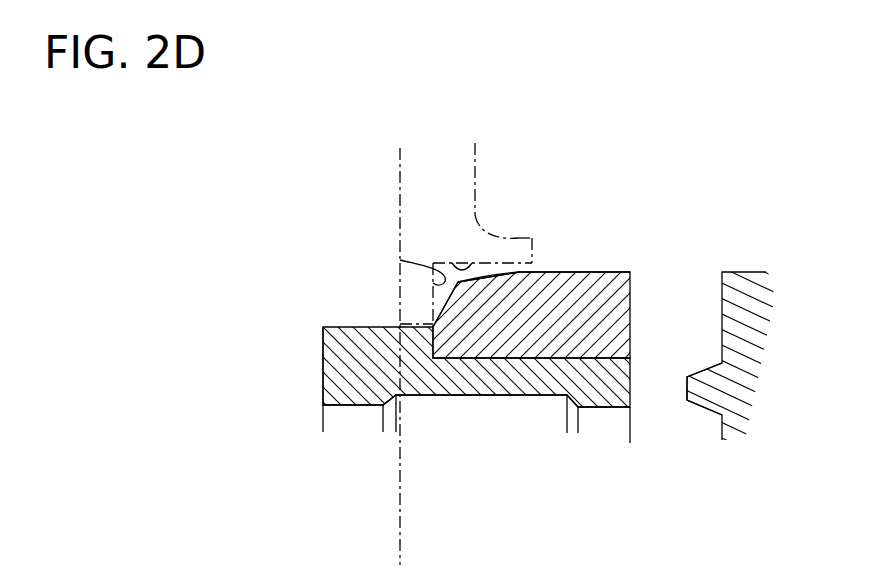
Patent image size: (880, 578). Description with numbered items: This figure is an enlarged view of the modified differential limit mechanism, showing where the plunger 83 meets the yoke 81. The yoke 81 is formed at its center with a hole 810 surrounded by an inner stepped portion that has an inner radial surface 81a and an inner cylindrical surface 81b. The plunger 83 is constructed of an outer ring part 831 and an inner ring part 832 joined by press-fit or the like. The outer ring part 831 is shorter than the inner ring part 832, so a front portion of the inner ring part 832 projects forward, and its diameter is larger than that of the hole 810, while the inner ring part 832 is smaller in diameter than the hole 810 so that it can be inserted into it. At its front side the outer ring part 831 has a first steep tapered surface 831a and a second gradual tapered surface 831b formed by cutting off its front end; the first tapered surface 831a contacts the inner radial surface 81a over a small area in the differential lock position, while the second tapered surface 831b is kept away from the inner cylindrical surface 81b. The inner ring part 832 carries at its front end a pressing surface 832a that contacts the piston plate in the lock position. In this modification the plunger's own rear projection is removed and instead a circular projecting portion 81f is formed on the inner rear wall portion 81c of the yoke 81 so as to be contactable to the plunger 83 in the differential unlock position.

The yoke 81 is at (399, 168).
The inner radial surface 81a is at (400, 260).
The inner cylindrical surface 81b is at (477, 263).
The inner rear wall portion 81c is at (724, 272).
The circular projecting portion 81f is at (692, 407).
The plunger 83 is at (567, 264).
The outer ring part 831 is at (605, 271).
The first steep tapered surface 831a is at (450, 288).
The second gradual tapered surface 831b is at (487, 273).
The inner ring part 832 is at (485, 372).
The pressing surface 832a is at (323, 358).
The hole 810 is at (428, 327).